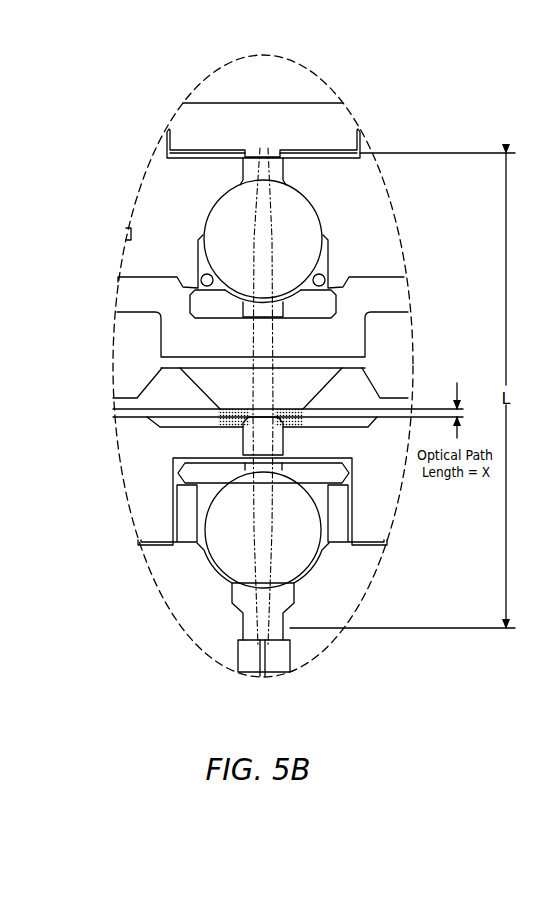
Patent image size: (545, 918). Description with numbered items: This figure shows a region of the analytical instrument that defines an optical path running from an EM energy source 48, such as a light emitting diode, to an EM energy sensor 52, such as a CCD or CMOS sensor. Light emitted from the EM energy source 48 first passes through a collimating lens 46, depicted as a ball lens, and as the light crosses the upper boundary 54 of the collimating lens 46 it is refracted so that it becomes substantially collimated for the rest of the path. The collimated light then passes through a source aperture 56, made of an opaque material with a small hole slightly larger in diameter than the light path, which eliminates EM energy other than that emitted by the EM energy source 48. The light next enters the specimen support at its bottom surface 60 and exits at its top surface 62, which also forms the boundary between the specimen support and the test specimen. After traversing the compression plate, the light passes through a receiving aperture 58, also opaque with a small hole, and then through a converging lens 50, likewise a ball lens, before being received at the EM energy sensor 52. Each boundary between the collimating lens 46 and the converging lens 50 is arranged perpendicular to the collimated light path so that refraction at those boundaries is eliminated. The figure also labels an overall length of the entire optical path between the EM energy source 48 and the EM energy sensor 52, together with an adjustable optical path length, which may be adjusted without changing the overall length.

The collimating lens 46 is at (217, 570).
The EM energy source 48 is at (233, 595).
The converging lens 50 is at (218, 208).
The EM energy sensor 52 is at (263, 149).
The upper boundary 54 is at (238, 475).
The source aperture 56 is at (190, 470).
The receiving aperture 58 is at (197, 302).
The bottom surface 60 is at (280, 468).
The top surface 62 is at (257, 408).